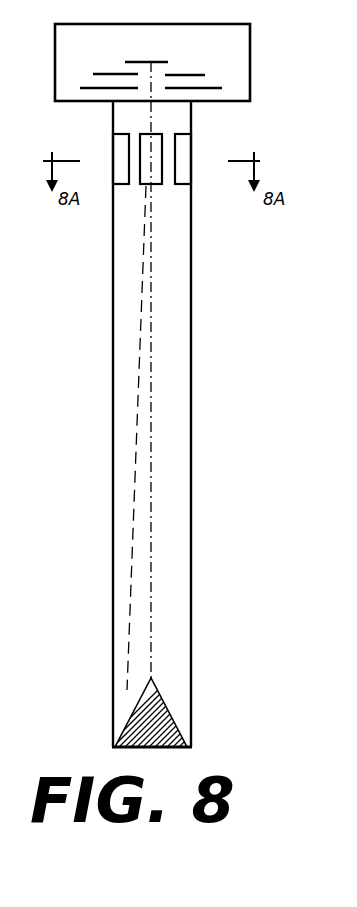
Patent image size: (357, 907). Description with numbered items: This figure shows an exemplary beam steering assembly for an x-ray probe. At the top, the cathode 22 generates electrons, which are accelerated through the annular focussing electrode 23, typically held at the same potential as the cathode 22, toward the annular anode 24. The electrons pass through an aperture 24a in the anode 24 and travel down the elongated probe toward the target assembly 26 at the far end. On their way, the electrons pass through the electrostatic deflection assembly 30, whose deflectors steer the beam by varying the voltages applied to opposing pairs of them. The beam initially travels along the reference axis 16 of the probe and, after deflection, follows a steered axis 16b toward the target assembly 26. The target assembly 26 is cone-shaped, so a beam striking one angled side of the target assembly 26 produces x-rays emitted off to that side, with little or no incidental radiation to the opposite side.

The reference axis 16 is at (153, 403).
The axis 16b is at (135, 517).
The cathode 22 is at (166, 62).
The annular focussing electrode 23 is at (110, 74).
The annular anode 24 is at (217, 88).
The aperture 24a is at (160, 88).
The target assembly 26 is at (156, 747).
The electrostatic deflection assembly 30 is at (177, 123).